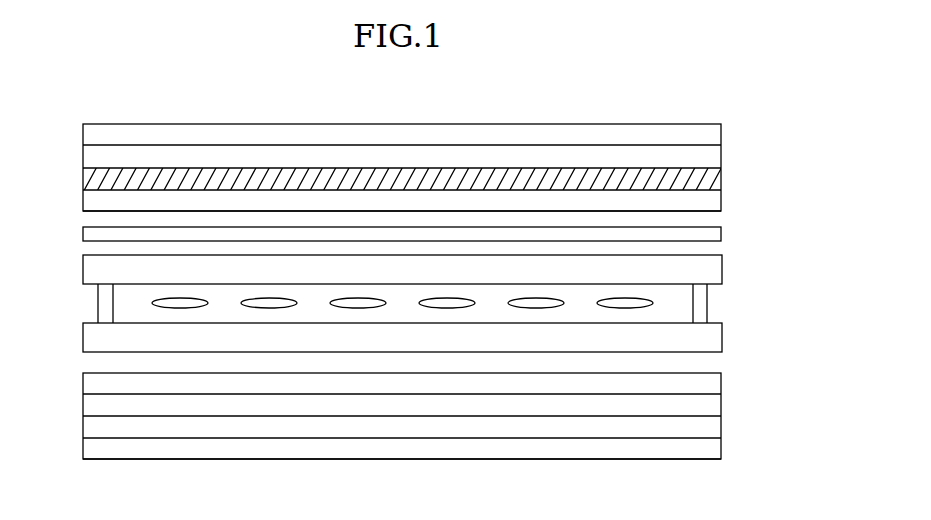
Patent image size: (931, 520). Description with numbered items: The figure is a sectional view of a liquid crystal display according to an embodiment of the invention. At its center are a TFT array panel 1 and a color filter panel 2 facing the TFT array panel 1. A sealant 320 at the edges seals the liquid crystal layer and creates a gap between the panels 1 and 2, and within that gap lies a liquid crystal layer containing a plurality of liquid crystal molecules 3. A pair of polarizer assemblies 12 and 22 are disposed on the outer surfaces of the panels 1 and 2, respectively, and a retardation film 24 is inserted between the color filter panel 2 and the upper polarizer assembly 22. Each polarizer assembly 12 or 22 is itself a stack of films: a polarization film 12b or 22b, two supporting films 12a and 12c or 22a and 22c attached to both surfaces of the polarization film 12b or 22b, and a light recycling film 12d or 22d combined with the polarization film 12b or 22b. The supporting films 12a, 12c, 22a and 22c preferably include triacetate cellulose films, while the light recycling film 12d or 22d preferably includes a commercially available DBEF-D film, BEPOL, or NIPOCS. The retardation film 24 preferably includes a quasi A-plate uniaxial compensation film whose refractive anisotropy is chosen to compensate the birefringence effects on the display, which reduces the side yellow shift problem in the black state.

The TFT array panel 1 is at (706, 340).
The color filter panel 2 is at (706, 275).
The liquid crystal molecules 3 is at (680, 305).
The sealant 320 is at (105, 303).
The retardation film 24 is at (706, 238).
The polarizer assembly 22 is at (453, 166).
The supporting film 22a is at (434, 207).
The polarization film 22b is at (706, 186).
The supporting film 22c is at (706, 160).
The light recycling film 22d is at (706, 131).
The polarizer assembly 12 is at (453, 417).
The supporting film 12a is at (706, 437).
The polarization film 12b is at (706, 412).
The supporting film 12c is at (706, 381).
The light recycling film 12d is at (434, 457).